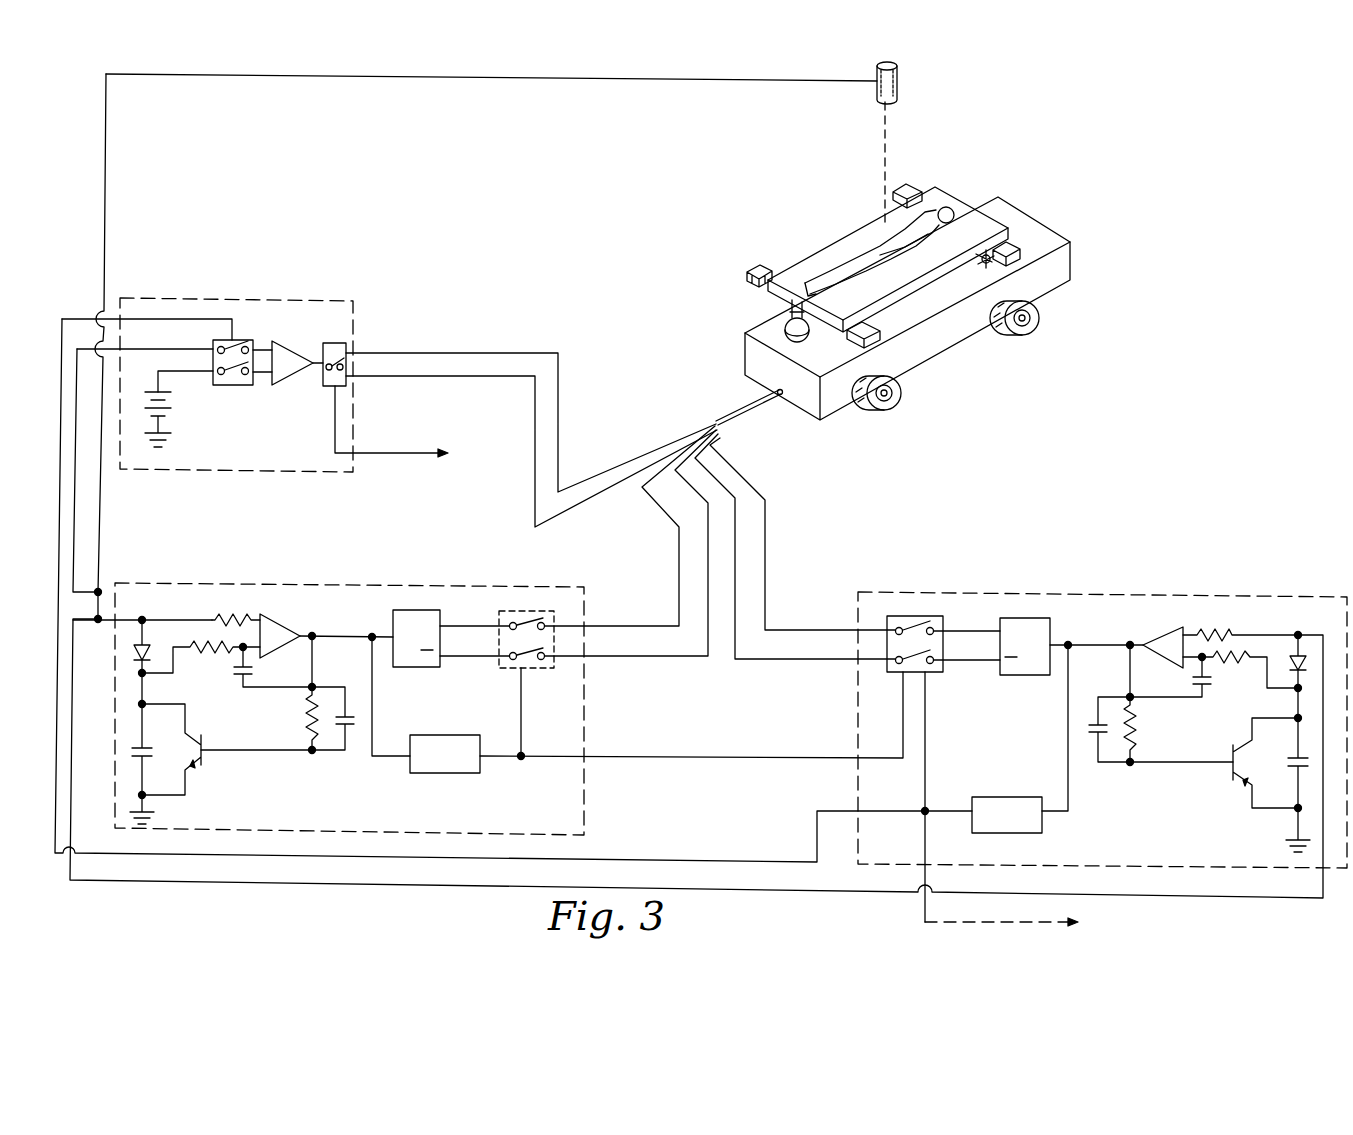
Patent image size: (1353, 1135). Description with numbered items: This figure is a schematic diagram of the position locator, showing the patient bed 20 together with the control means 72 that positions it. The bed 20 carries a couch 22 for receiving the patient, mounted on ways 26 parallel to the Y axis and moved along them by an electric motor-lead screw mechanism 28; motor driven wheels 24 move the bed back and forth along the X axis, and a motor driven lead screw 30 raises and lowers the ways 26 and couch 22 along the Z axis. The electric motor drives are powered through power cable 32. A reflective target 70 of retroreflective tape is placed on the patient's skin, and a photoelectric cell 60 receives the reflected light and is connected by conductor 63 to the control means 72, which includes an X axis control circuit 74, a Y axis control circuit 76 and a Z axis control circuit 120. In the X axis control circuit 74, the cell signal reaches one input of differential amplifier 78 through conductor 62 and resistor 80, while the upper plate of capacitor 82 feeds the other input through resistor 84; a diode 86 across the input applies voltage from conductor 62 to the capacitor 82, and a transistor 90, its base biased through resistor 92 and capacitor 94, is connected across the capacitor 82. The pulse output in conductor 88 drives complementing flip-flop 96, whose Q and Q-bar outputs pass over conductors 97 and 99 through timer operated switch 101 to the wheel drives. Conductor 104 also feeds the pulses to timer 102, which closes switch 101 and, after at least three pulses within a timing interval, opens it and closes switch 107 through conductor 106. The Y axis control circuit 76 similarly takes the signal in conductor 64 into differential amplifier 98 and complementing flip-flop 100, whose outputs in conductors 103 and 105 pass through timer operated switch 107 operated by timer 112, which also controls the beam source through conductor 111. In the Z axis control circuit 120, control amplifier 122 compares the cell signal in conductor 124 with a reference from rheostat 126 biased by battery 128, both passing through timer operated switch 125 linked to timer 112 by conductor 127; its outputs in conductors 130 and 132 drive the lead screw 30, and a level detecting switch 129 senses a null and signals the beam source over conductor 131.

The bed 20 is at (1058, 230).
The couch 22 is at (786, 270).
The motor driven wheels 24 is at (1040, 322).
The ways 26 is at (745, 277).
The electric motor-lead screw mechanism 28 is at (982, 264).
The motor driven lead screw 30 is at (785, 326).
The power cable 32 is at (720, 416).
The photoelectric cell 60 is at (900, 90).
The conductor 62 is at (154, 619).
The conductor 63 is at (372, 81).
The conductor 64 is at (77, 890).
The reflective target 70 is at (882, 246).
The control means 72 is at (792, 783).
The X axis control circuit 74 is at (585, 823).
The Y axis control circuit 76 is at (1191, 592).
The differential amplifier 78 is at (279, 616).
The resistor 80 is at (226, 618).
The capacitor 82 is at (130, 748).
The resistor 84 is at (192, 660).
The diode 86 is at (135, 652).
The conductor 88 is at (346, 635).
The transistor 90 is at (205, 763).
The resistor 92 is at (307, 717).
The capacitor 94 is at (348, 730).
The complementing flip-flop 96 is at (414, 609).
The conductor 97 is at (457, 625).
The differential amplifier 98 is at (1165, 636).
The conductor 99 is at (468, 658).
The complementing flip-flop 100 is at (1021, 617).
The timer operated switch 101 is at (540, 610).
The timer 102 is at (432, 774).
The conductor 103 is at (960, 630).
The conductor 104 is at (375, 706).
The conductor 105 is at (968, 661).
The conductor 106 is at (650, 757).
The timer operated switch 107 is at (899, 615).
The conductor 111 is at (981, 926).
The timer 112 is at (990, 796).
The Z axis control circuit 120 is at (308, 298).
The control amplifier 122 is at (288, 347).
The conductor 124 is at (77, 349).
The timer operated switch 125 is at (240, 386).
The rheostat 126 is at (170, 371).
The conductor 127 is at (86, 316).
The battery 128 is at (172, 414).
The level detecting switch 129 is at (350, 345).
The conductor 130 is at (457, 352).
The conductor 131 is at (333, 425).
The conductor 132 is at (456, 378).